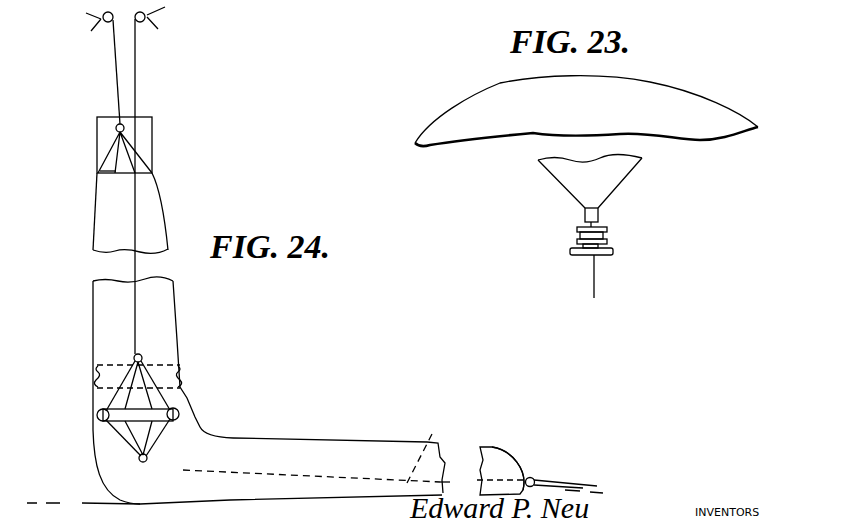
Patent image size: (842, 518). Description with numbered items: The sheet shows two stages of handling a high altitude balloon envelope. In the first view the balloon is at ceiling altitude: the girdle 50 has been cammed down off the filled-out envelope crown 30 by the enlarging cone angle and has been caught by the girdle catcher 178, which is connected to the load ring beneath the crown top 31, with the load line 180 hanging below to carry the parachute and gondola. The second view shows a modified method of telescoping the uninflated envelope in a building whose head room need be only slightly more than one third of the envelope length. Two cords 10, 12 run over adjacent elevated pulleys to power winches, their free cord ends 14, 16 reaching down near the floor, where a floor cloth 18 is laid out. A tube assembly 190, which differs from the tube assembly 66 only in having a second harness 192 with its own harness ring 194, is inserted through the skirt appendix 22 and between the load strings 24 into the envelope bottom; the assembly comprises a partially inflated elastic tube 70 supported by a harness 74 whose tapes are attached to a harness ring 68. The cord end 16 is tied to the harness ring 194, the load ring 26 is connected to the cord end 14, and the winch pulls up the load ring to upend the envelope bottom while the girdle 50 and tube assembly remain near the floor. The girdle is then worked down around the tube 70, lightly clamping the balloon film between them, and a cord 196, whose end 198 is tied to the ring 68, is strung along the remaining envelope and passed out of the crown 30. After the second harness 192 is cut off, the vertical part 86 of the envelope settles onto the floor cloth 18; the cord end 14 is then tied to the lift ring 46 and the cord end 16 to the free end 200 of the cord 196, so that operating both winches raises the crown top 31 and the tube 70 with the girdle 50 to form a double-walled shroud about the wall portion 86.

In FIG. 24, the cord 10 is at (91, 16).
In FIG. 24, the cord 12 is at (159, 14).
In FIG. 24, the cord end 14 is at (118, 125).
In FIG. 24, the cord end 16 is at (136, 333).
In FIG. 24, the floor cloth 18 is at (82, 503).
In FIG. 24, the skirt appendix 22 is at (153, 146).
In FIG. 24, the load strings 24 is at (115, 164).
In FIG. 24, the load ring 26 is at (116, 130).
In FIG. 24, the envelope crown 30 is at (497, 448).
In FIG. 23, the envelope crown 30 is at (708, 103).
In FIG. 24, the crown top 31 is at (522, 467).
In FIG. 23, the crown top 31 is at (543, 80).
In FIG. 24, the lift ring 46 is at (534, 479).
In FIG. 24, the girdle 50 is at (92, 372).
In FIG. 23, the girdle 50 is at (608, 232).
In FIG. 24, the tube assembly 66 is at (112, 436).
In FIG. 24, the harness ring 68 is at (140, 459).
In FIG. 24, the elastic tube 70 is at (180, 414).
In FIG. 24, the harness 74 is at (170, 439).
In FIG. 24, the vertical part of the envelope 86 is at (93, 285).
In FIG. 23, the girdle catcher 178 is at (572, 252).
In FIG. 23, the load line 180 is at (596, 273).
In FIG. 24, the tube assembly 190 is at (96, 417).
In FIG. 24, the second harness 192 is at (154, 363).
In FIG. 24, the harness ring 194 is at (141, 353).
In FIG. 24, the cord 196 is at (473, 482).
In FIG. 24, the cord end 198 is at (183, 470).
In FIG. 24, the free end of the cord 200 is at (567, 487).